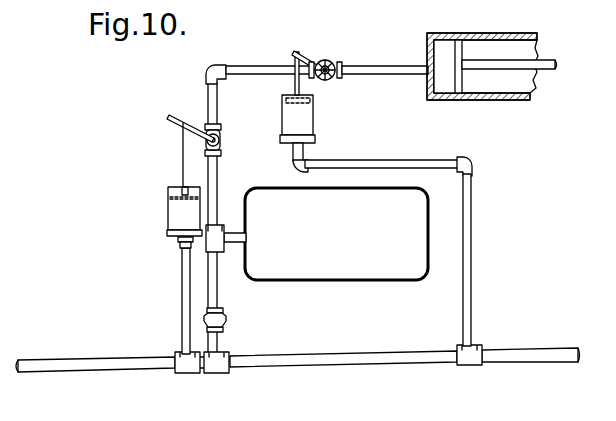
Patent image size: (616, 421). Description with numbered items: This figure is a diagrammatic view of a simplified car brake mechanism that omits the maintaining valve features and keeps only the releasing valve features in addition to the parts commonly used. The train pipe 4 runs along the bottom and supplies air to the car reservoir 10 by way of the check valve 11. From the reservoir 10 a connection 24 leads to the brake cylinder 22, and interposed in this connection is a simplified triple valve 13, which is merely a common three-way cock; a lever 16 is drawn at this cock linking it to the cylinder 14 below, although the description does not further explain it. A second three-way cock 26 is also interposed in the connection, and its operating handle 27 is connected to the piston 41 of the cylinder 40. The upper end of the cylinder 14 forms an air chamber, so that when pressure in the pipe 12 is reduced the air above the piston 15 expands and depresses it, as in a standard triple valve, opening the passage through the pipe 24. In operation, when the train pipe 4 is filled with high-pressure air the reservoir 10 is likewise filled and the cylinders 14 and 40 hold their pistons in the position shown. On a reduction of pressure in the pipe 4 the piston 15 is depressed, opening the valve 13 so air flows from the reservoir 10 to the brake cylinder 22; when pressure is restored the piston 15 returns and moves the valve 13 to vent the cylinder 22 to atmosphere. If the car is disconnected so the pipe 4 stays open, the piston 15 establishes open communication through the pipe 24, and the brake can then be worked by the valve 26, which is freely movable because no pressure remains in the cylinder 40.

The train pipe 4 is at (110, 368).
The car reservoir 10 is at (332, 272).
The check valve 11 is at (226, 320).
The pipe 12 is at (468, 237).
The triple valve 13 is at (325, 58).
The cylinder 14 is at (308, 122).
The piston 15 is at (313, 102).
The valve lever 16 is at (300, 53).
The brake cylinder 22 is at (445, 32).
The connection 24 is at (375, 65).
The three way cock 26 is at (222, 135).
The operating handle 27 is at (173, 127).
The cylinder 40 is at (170, 217).
The piston 41 is at (168, 199).